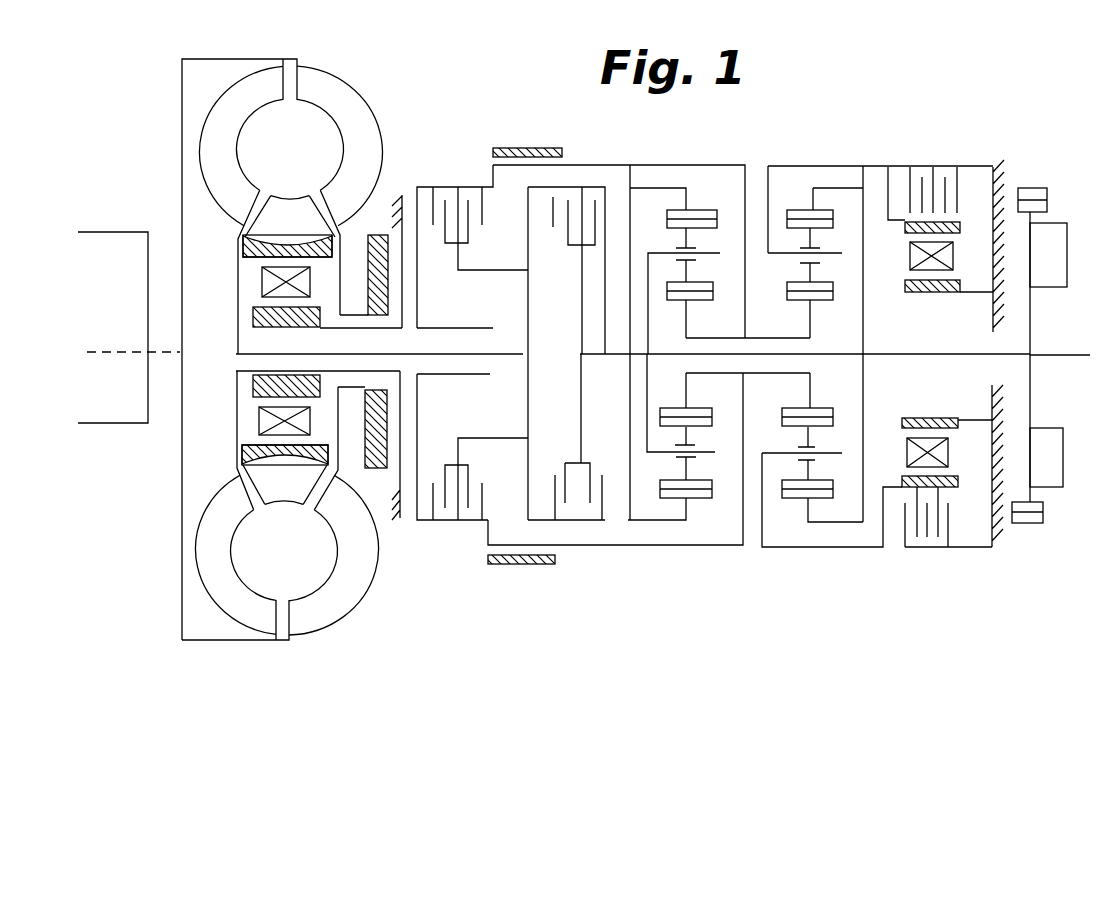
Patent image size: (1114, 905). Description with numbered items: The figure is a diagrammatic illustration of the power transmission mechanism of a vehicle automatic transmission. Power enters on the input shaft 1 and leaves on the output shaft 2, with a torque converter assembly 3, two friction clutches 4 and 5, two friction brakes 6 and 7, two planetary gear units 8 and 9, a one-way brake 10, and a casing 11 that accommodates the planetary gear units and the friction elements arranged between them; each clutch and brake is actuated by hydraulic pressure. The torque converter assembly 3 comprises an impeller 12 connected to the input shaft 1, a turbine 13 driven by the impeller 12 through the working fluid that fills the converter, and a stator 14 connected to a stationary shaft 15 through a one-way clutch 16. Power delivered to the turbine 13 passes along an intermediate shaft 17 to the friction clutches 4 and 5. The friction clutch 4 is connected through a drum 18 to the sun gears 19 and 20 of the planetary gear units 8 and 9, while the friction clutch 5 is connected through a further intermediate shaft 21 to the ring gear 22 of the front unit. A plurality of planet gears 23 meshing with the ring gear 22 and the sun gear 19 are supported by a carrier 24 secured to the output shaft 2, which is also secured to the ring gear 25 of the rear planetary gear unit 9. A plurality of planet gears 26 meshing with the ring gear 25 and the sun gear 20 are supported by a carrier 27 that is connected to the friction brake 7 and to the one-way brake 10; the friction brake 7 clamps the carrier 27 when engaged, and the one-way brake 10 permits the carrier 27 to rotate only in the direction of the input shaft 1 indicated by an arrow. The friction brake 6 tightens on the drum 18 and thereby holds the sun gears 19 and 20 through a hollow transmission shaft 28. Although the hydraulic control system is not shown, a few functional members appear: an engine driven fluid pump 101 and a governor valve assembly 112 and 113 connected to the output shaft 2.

The input shaft 1 is at (165, 346).
The output shaft 2 is at (1058, 355).
The torque converter assembly 3 is at (325, 70).
The friction clutch 4 is at (449, 176).
The friction clutch 5 is at (600, 178).
The friction brake 6 is at (530, 137).
The friction brake 7 is at (937, 157).
The planetary gear unit 8 is at (704, 196).
The planetary gear unit 9 is at (799, 197).
The one-way brake 10 is at (910, 256).
The casing 11 is at (402, 192).
The impeller 12 is at (372, 162).
The turbine 13 is at (230, 162).
The stator 14 is at (298, 231).
The stationary shaft 15 is at (350, 328).
The one-way clutch 16 is at (262, 281).
The intermediate shaft 17 is at (250, 355).
The drum 18 is at (585, 164).
The sun gear 19 is at (696, 302).
The sun gear 20 is at (790, 300).
The intermediate shaft 21 is at (598, 353).
The ring gear 22 is at (668, 211).
The planet gears 23 is at (697, 279).
The carrier 24 is at (649, 312).
The ring gear 25 is at (828, 208).
The planet gears 26 is at (786, 290).
The carrier 27 is at (767, 238).
The hollow transmission shaft 28 is at (765, 375).
The engine driven fluid pump 101 is at (372, 470).
The governor valve assembly 112 is at (1063, 458).
The governor valve assembly 113 is at (1067, 236).